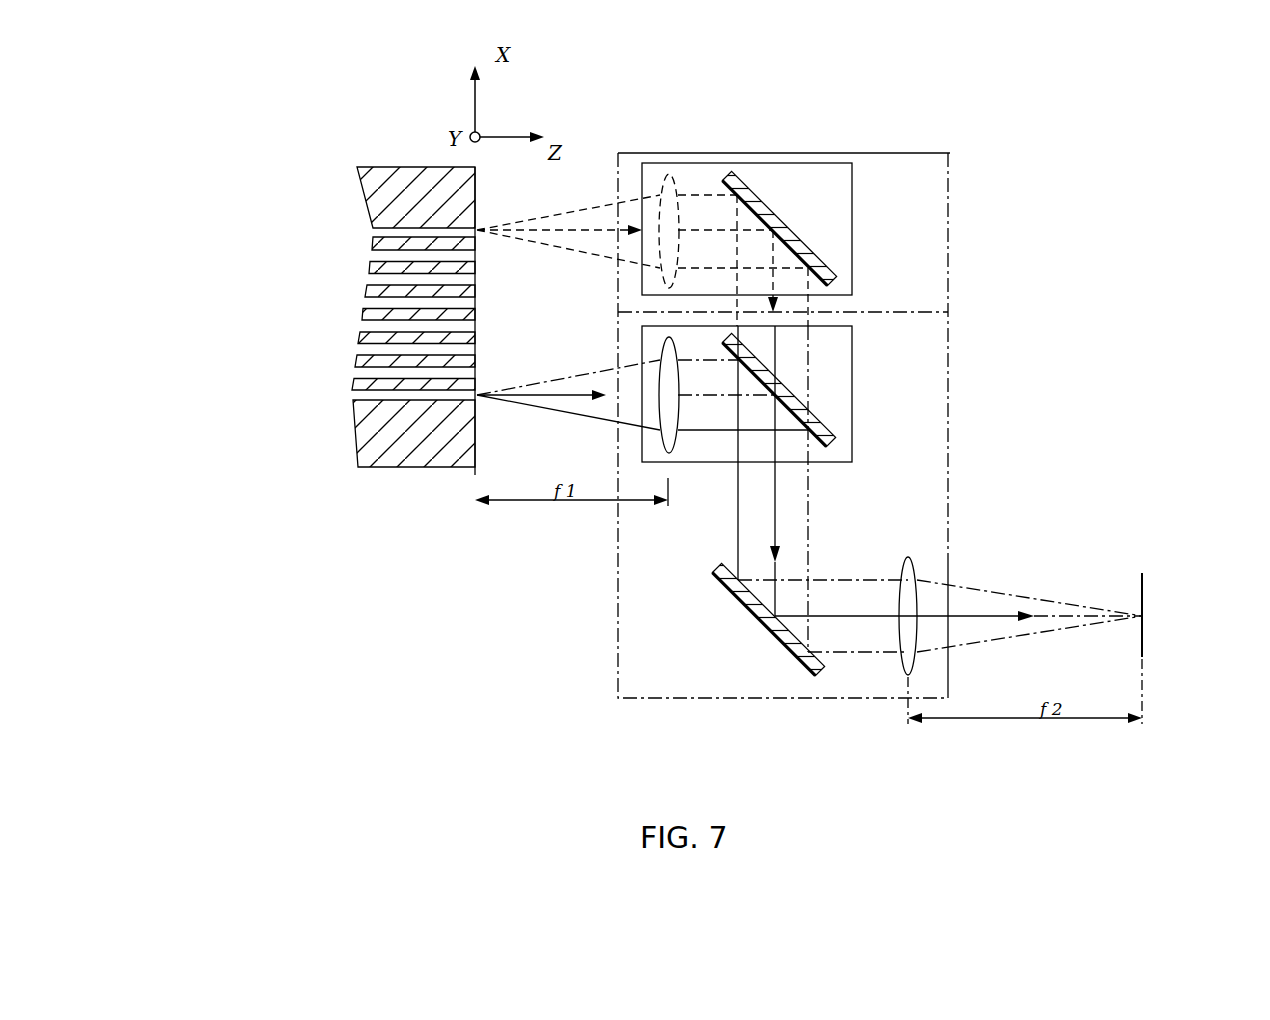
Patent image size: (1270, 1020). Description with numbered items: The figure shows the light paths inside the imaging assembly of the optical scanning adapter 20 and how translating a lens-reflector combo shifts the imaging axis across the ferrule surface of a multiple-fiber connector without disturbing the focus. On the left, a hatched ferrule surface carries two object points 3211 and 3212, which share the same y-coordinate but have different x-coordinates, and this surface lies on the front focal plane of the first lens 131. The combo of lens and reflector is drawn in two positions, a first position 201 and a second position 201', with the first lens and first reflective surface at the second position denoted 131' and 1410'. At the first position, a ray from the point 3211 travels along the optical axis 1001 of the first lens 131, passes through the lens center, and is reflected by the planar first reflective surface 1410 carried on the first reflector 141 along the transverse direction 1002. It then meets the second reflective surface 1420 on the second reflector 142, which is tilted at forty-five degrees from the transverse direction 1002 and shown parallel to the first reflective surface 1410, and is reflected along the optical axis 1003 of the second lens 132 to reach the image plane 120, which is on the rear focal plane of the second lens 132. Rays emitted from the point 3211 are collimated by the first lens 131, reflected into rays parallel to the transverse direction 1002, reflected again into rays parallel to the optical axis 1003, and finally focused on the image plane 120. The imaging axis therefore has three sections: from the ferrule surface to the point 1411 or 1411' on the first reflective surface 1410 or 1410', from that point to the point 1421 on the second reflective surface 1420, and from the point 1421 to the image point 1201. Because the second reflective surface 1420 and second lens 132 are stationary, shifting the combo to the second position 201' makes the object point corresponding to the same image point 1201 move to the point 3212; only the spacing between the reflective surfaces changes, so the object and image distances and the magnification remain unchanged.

The optical scanning adapter 20 is at (662, 698).
The object point 3212 is at (477, 230).
The object point 3211 is at (477, 396).
The second position 201' is at (811, 167).
The first position 201 is at (897, 362).
The first lens 131' is at (721, 164).
The first lens 131 is at (617, 508).
The second lens 132 is at (917, 575).
The first reflector 141 is at (923, 263).
The first reflective surface 1410' is at (897, 234).
The point on first reflective surface 1411' is at (857, 189).
The first reflective surface 1410 is at (894, 399).
The point on first reflective surface 1411 is at (890, 418).
The second reflector 142 is at (780, 672).
The second reflective surface 1420 is at (825, 658).
The point on second reflective surface 1421 is at (785, 618).
The image plane 120 is at (1138, 541).
The image point 1201 is at (1142, 616).
The optical axis of the first lens 1001 is at (613, 372).
The transverse direction 1002 is at (775, 487).
The optical axis of the second lens 1003 is at (877, 617).